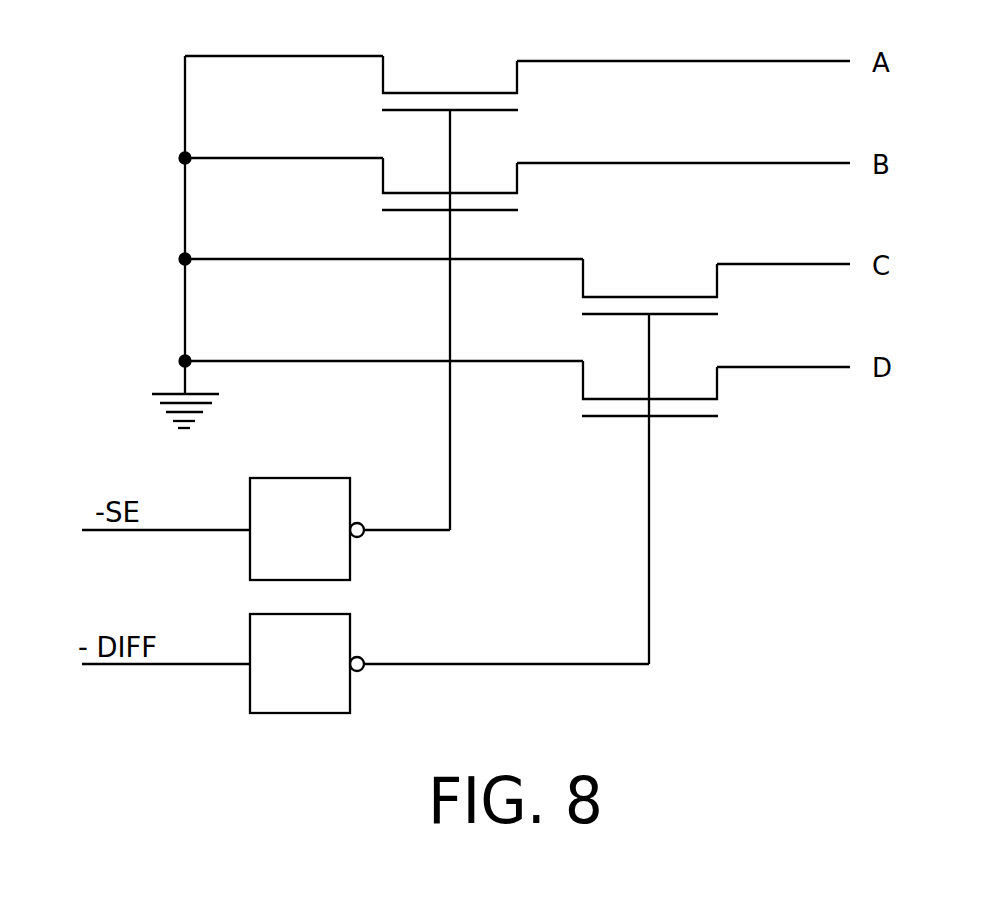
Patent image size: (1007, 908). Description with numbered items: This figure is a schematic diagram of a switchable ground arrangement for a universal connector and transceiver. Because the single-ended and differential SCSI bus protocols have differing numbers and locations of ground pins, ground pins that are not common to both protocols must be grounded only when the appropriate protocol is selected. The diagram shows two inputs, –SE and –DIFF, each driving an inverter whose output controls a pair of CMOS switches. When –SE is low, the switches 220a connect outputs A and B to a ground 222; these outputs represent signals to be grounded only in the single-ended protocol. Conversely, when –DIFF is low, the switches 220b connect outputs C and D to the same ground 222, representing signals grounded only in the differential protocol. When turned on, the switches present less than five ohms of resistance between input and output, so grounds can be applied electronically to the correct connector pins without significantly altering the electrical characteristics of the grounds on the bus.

The switches 220a is at (549, 178).
The switches 220b is at (749, 399).
The ground 222 is at (152, 412).